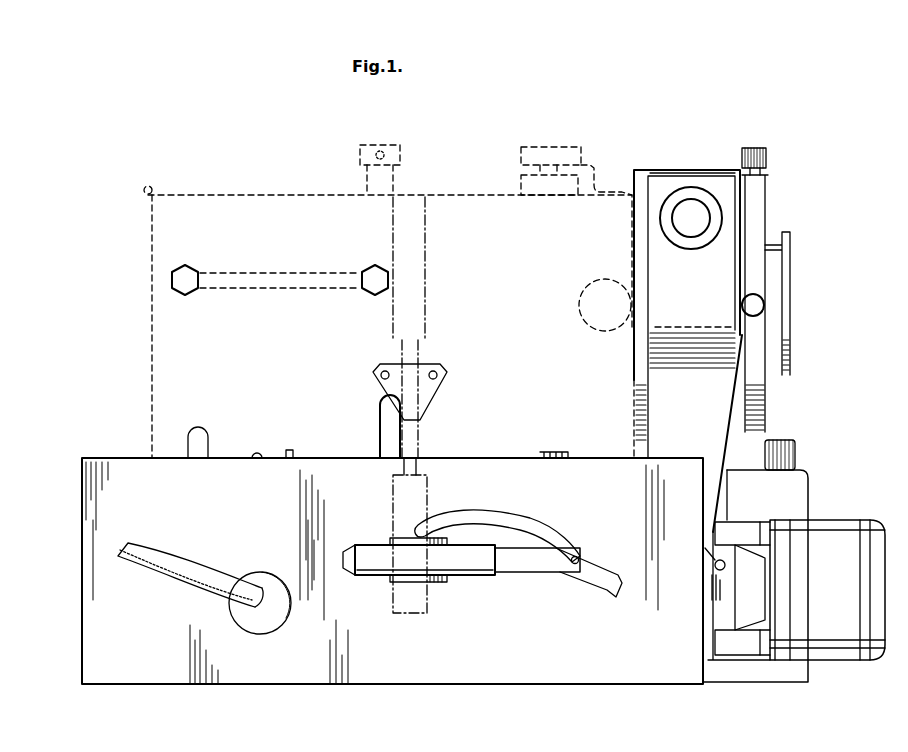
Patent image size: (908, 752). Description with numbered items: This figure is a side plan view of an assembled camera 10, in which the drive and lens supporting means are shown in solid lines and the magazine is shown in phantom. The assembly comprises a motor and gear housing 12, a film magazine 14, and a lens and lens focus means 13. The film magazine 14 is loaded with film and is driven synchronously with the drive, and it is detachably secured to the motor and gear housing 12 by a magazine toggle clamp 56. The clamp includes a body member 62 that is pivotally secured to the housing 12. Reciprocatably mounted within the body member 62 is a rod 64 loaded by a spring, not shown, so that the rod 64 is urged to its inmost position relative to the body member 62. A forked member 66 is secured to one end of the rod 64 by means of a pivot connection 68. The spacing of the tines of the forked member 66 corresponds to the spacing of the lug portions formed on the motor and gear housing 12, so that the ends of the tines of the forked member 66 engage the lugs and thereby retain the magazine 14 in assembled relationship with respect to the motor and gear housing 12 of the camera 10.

The camera 10 is at (79, 388).
The motor and gear housing 12 is at (83, 630).
The lens and lens focus means 13 is at (688, 170).
The film magazine 14 is at (152, 330).
The magazine toggle clamp 56 is at (545, 574).
The body member 62 is at (385, 578).
The rod 64 is at (500, 570).
The forked member 66 is at (600, 568).
The pivot connection 68 is at (578, 558).